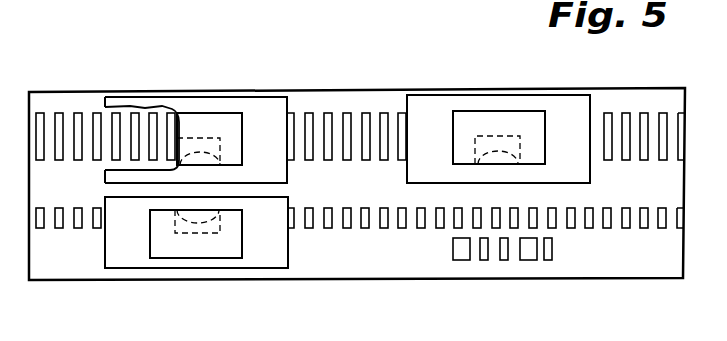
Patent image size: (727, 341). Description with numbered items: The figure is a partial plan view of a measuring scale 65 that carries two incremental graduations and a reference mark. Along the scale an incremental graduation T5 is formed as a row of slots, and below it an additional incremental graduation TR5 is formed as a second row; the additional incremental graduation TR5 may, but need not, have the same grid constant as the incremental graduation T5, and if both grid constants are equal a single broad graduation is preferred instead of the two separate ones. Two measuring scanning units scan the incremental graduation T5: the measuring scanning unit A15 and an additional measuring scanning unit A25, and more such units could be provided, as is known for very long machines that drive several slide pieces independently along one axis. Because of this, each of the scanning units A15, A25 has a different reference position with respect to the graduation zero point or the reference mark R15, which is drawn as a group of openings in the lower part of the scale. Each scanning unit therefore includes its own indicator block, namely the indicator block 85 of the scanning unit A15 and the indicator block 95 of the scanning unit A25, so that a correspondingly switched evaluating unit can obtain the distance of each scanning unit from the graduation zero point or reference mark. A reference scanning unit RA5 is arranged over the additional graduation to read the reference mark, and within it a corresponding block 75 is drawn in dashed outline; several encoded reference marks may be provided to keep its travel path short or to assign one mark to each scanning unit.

The measuring scale 65 is at (633, 262).
The lower connection pad with component outline 75 is at (195, 222).
The indicator block 85 is at (200, 155).
The indicator block 95 is at (498, 153).
The measuring scanning unit A15 is at (263, 112).
The additional measuring scanning unit A25 is at (477, 118).
The reference scanning unit RA5 is at (265, 257).
The incremental graduation T5 is at (384, 112).
The additional incremental graduation TR5 is at (345, 228).
The reference mark R15 is at (553, 280).